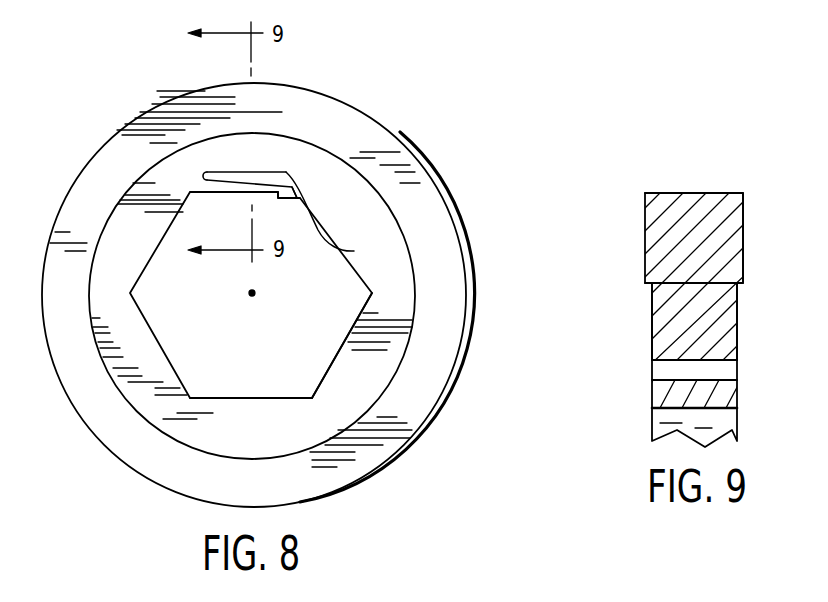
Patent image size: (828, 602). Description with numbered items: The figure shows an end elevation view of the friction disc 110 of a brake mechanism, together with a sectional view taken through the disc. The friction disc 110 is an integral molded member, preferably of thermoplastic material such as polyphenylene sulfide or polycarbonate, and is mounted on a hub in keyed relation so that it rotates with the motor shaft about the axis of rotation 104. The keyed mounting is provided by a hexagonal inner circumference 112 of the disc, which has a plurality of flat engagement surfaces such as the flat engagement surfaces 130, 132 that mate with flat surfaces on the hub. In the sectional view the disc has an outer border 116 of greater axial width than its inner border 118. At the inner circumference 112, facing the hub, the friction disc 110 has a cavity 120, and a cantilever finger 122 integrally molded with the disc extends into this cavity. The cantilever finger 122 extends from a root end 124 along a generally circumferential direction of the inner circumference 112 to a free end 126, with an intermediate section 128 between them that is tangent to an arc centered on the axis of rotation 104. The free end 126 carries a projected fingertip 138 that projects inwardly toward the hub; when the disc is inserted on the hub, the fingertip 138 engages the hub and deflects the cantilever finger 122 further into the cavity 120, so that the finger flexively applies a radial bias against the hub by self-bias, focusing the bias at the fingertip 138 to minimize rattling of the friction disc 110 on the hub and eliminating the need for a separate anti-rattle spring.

In FIG. 8, the axis of rotation 104 is at (250, 296).
In FIG. 8, the friction disc 110 is at (101, 447).
In FIG. 9, the friction disc 110 is at (690, 194).
In FIG. 8, the hexagonal inner circumference 112 is at (157, 337).
In FIG. 8, the outer border 116 is at (422, 213).
In FIG. 9, the outer border 116 is at (643, 237).
In FIG. 8, the inner border 118 is at (395, 285).
In FIG. 9, the inner border 118 is at (652, 322).
In FIG. 8, the cavity 120 is at (286, 172).
In FIG. 9, the cavity 120 is at (660, 369).
In FIG. 8, the cantilever finger 122 is at (297, 188).
In FIG. 9, the cantilever finger 122 is at (657, 394).
In FIG. 8, the root end 124 is at (200, 183).
In FIG. 8, the free end 126 is at (293, 192).
In FIG. 8, the intermediate section 128 is at (213, 190).
In FIG. 8, the flat engagement surface 130 is at (252, 397).
In FIG. 8, the flat engagement surface 132 is at (343, 342).
In FIG. 8, the projected fingertip 138 is at (339, 218).